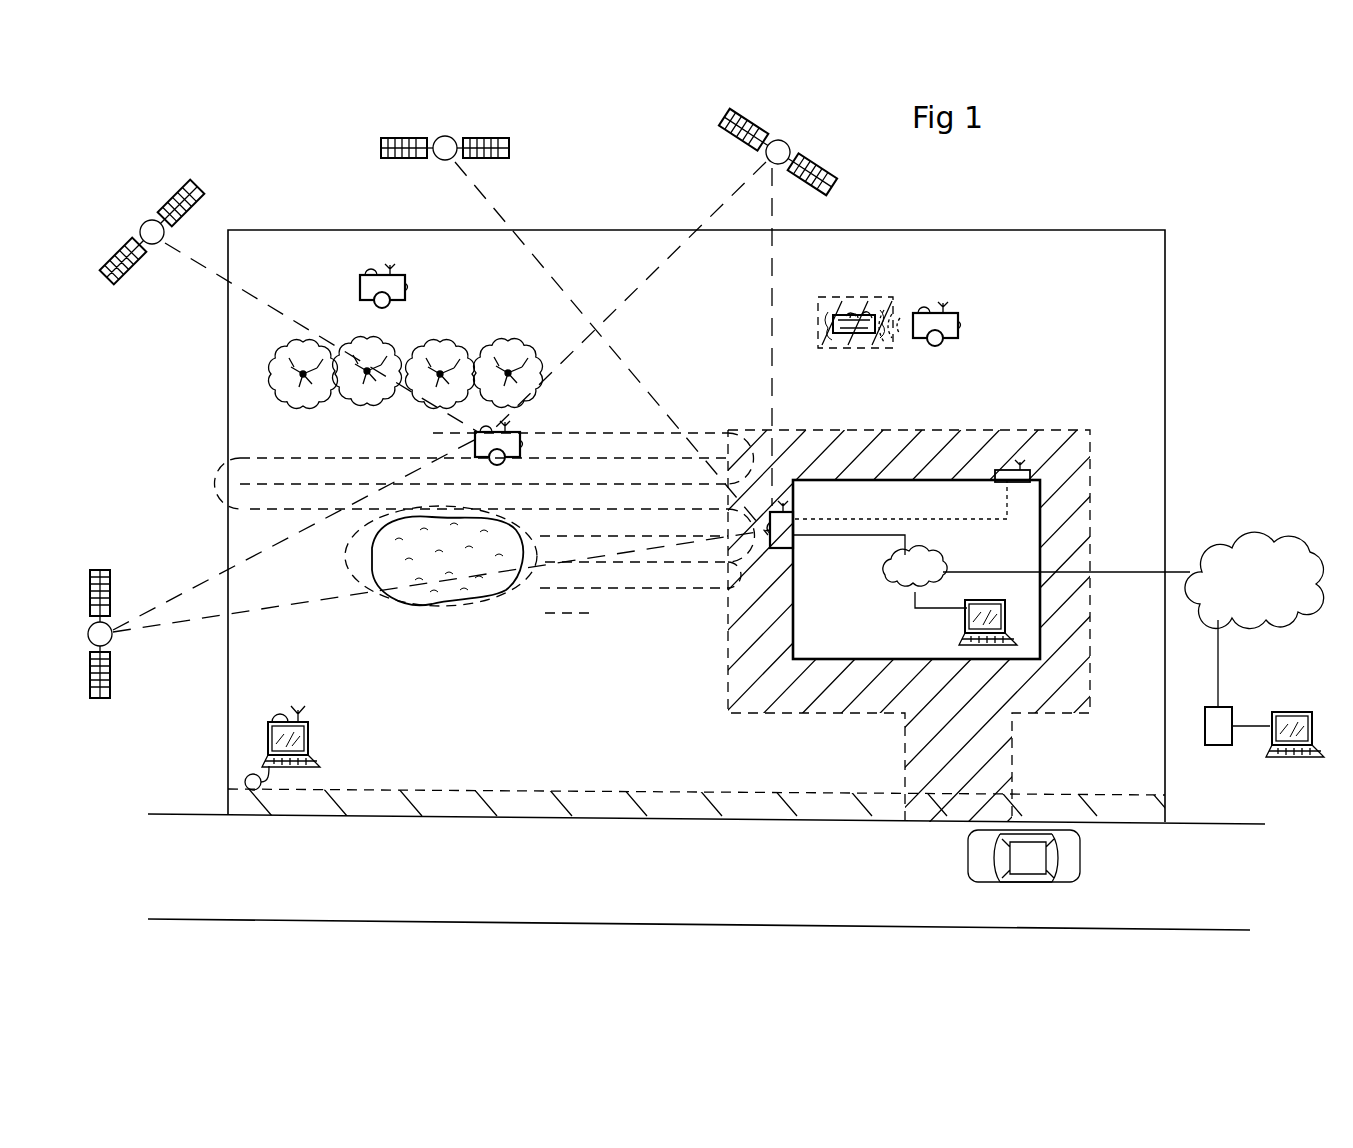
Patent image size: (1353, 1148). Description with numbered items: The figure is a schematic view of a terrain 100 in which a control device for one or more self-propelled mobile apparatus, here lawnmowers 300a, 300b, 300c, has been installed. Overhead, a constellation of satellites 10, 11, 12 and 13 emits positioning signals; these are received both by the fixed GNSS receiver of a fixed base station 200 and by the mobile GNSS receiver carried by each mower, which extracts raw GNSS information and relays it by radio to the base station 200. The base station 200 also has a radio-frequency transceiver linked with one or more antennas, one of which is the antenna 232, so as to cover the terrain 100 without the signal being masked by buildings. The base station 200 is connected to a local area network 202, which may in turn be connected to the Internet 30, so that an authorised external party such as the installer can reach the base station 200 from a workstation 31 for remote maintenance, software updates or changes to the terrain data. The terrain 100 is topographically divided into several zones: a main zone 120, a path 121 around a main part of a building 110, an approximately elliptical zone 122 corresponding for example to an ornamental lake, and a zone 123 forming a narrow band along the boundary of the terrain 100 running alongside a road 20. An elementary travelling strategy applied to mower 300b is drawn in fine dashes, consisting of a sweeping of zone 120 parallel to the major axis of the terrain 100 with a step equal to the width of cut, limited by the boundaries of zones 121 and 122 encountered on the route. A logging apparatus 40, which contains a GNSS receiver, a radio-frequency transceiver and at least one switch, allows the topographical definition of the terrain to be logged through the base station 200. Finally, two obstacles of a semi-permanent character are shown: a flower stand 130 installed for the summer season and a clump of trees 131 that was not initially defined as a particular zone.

The satellite 10 is at (100, 584).
The satellite 11 is at (149, 220).
The satellite 12 is at (458, 140).
The satellite 13 is at (790, 150).
The road 20 is at (652, 872).
The Internet 30 is at (1258, 578).
The workstation 31 is at (1222, 745).
The logging apparatus 40 is at (312, 732).
The terrain 100 is at (1170, 360).
The building 110 is at (991, 569).
The main zone 120 is at (485, 509).
The path 121 is at (744, 695).
The approximately elliptical zone 122 is at (438, 602).
The zone forming a narrow band 123 is at (478, 808).
The flower stand 130 is at (846, 304).
The clump of trees 131 is at (496, 344).
The fixed base station 200 is at (787, 524).
The local area network 202 is at (914, 562).
The antenna 232 is at (1034, 464).
The lawnmower 300a is at (380, 280).
The lawnmower 300b is at (478, 448).
The lawnmower 300c is at (957, 324).